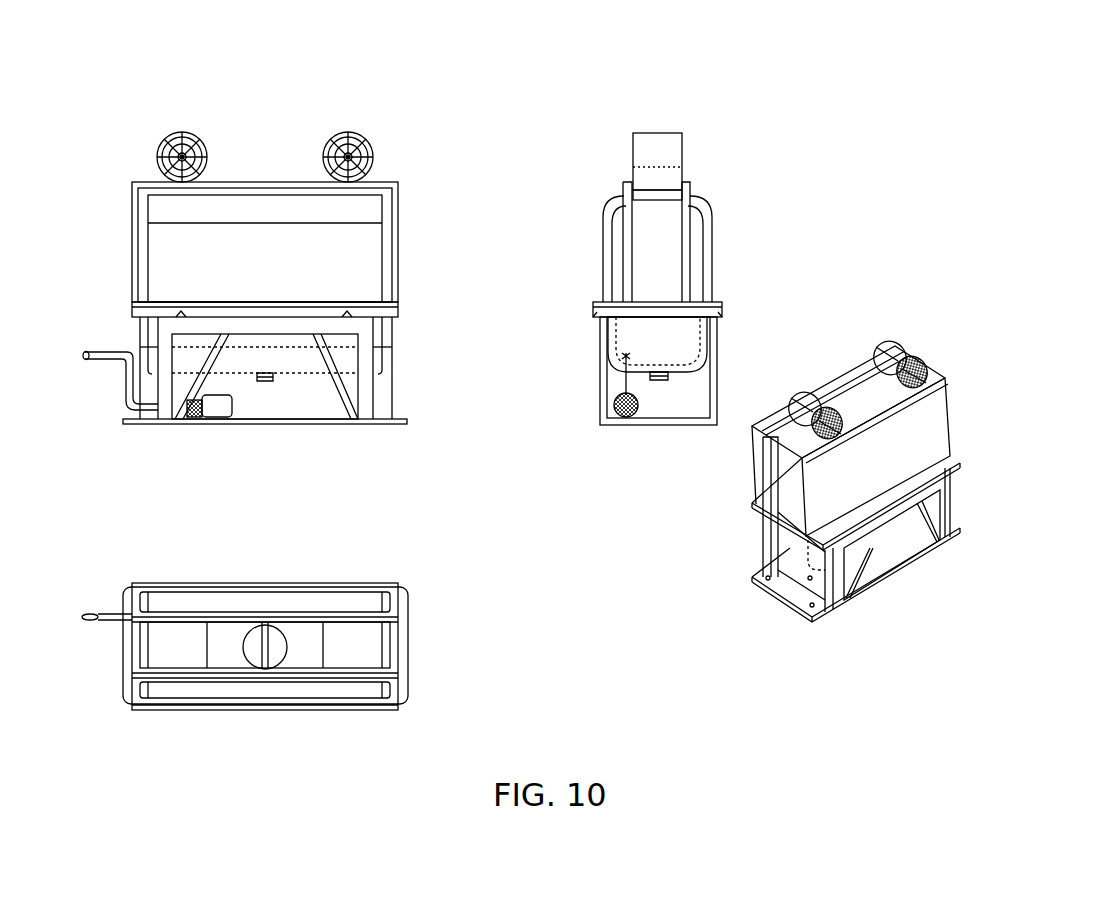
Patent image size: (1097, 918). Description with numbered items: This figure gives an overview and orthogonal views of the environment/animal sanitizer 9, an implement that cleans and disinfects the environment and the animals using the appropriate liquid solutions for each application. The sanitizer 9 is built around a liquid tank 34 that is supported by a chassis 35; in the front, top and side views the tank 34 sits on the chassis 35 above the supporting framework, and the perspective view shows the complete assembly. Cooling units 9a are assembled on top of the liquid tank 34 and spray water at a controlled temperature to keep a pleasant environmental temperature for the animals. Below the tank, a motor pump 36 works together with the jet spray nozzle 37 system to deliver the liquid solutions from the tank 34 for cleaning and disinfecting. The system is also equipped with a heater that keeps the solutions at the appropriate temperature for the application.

The environment/animal sanitizer 9 is at (835, 480).
The cooling units 9a is at (163, 133).
The liquid tank 34 is at (277, 624).
The chassis 35 is at (133, 311).
The motor pump 36 is at (607, 420).
The jet spray nozzle 37 is at (98, 613).